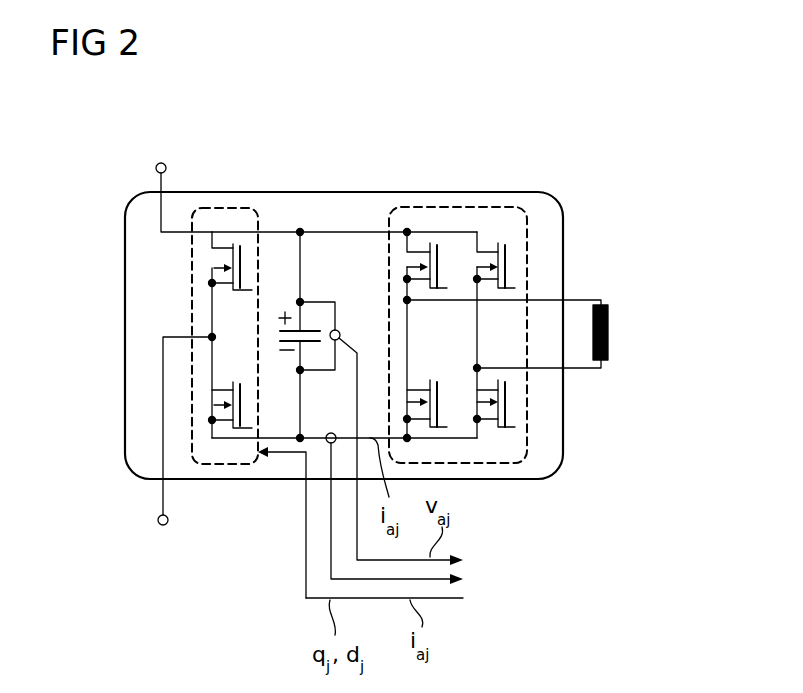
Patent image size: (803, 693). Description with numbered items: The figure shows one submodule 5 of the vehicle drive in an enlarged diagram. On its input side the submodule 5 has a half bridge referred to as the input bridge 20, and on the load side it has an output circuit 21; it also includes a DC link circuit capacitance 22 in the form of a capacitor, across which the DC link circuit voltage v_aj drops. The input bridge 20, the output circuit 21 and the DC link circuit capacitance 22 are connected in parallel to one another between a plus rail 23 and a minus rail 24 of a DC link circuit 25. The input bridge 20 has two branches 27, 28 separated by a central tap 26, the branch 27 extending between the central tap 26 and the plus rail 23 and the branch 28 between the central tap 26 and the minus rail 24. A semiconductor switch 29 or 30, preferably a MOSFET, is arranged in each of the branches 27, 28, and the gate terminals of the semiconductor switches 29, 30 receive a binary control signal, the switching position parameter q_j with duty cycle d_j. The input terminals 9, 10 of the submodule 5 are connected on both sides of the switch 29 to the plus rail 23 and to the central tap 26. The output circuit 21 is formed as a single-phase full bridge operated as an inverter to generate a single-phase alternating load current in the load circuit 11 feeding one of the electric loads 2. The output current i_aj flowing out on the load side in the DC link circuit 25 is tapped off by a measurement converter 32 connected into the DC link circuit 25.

The electric load 2 is at (609, 330).
The submodule 5 is at (125, 226).
The input terminal 9 is at (161, 162).
The input terminal 10 is at (165, 526).
The load circuit 11 is at (585, 298).
The input bridge 20 is at (215, 207).
The output circuit 21 is at (470, 206).
The DC link circuit capacitance 22 is at (300, 298).
The plus rail 23 is at (369, 232).
The minus rail 24 is at (286, 440).
The DC link circuit 25 is at (344, 327).
The central tap 26 is at (212, 337).
The branch 27 is at (212, 302).
The branch 28 is at (212, 375).
The semiconductor switch 29 is at (214, 268).
The semiconductor switch 30 is at (214, 405).
The measurement converter 32 is at (330, 432).